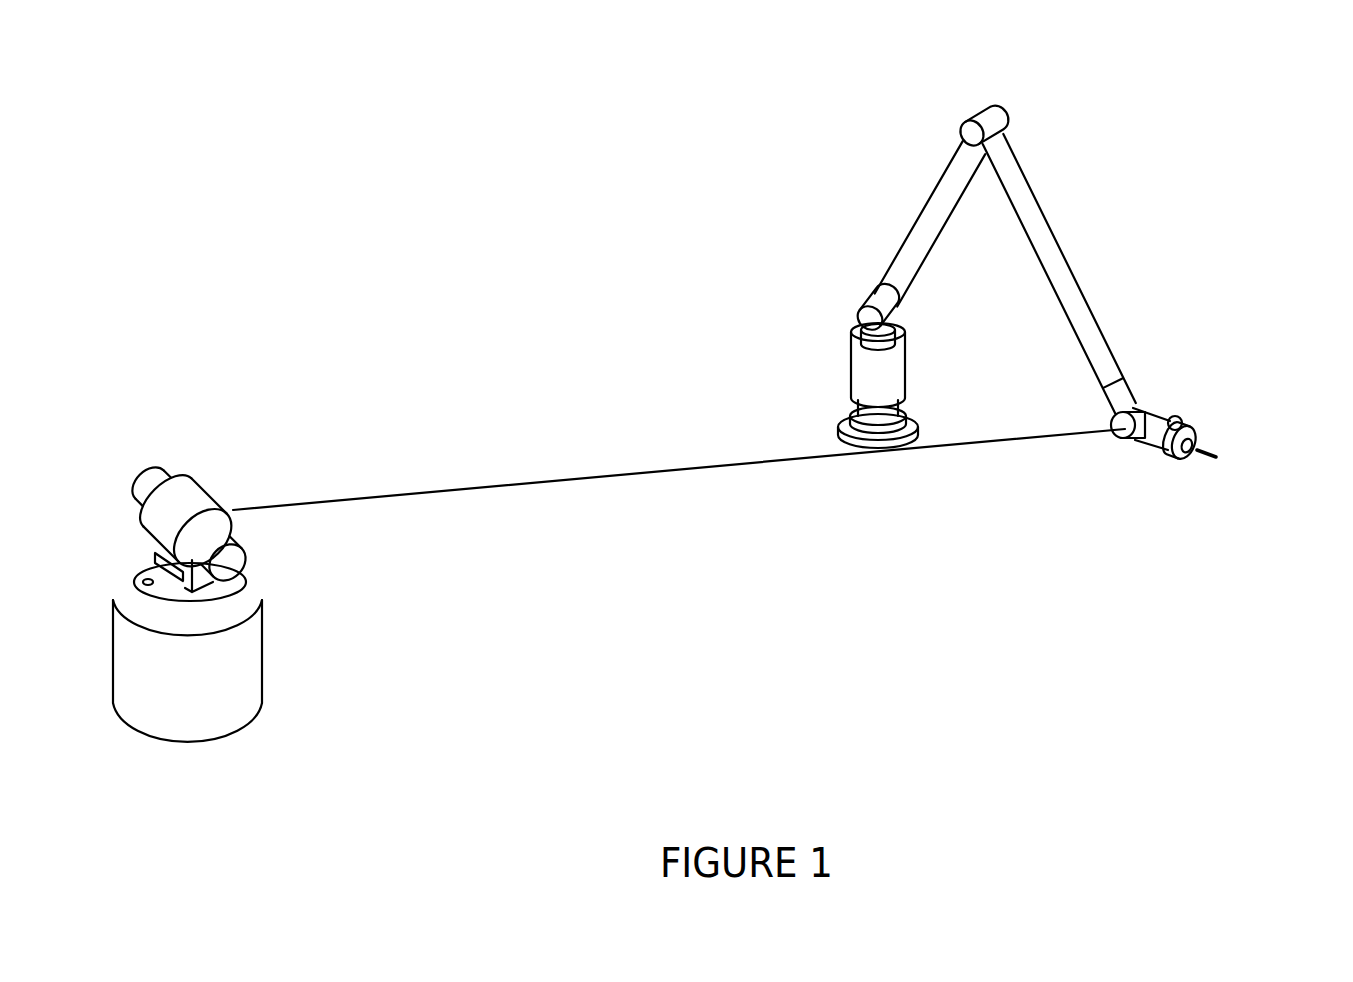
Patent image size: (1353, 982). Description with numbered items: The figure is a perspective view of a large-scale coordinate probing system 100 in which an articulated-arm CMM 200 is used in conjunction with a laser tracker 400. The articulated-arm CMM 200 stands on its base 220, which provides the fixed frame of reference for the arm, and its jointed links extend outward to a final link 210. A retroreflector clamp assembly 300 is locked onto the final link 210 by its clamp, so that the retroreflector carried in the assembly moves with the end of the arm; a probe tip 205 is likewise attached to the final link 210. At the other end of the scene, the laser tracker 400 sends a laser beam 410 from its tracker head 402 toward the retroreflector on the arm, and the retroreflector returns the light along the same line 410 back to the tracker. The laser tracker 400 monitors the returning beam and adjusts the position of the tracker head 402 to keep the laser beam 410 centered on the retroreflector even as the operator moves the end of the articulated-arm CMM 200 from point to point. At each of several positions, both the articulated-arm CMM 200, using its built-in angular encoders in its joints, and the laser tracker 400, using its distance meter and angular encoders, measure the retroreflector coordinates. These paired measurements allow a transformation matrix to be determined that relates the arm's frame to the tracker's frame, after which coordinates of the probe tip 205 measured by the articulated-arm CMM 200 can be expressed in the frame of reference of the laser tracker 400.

The large-scale coordinate probing system 100 is at (468, 105).
The articulated-arm CMM 200 is at (853, 190).
The probe tip 205 is at (1220, 456).
The final link 210 is at (1153, 440).
The base 220 is at (918, 425).
The retroreflector clamp assembly 300 is at (1213, 402).
The laser tracker 400 is at (250, 432).
The tracker head 402 is at (222, 493).
The laser beam 410 is at (588, 473).